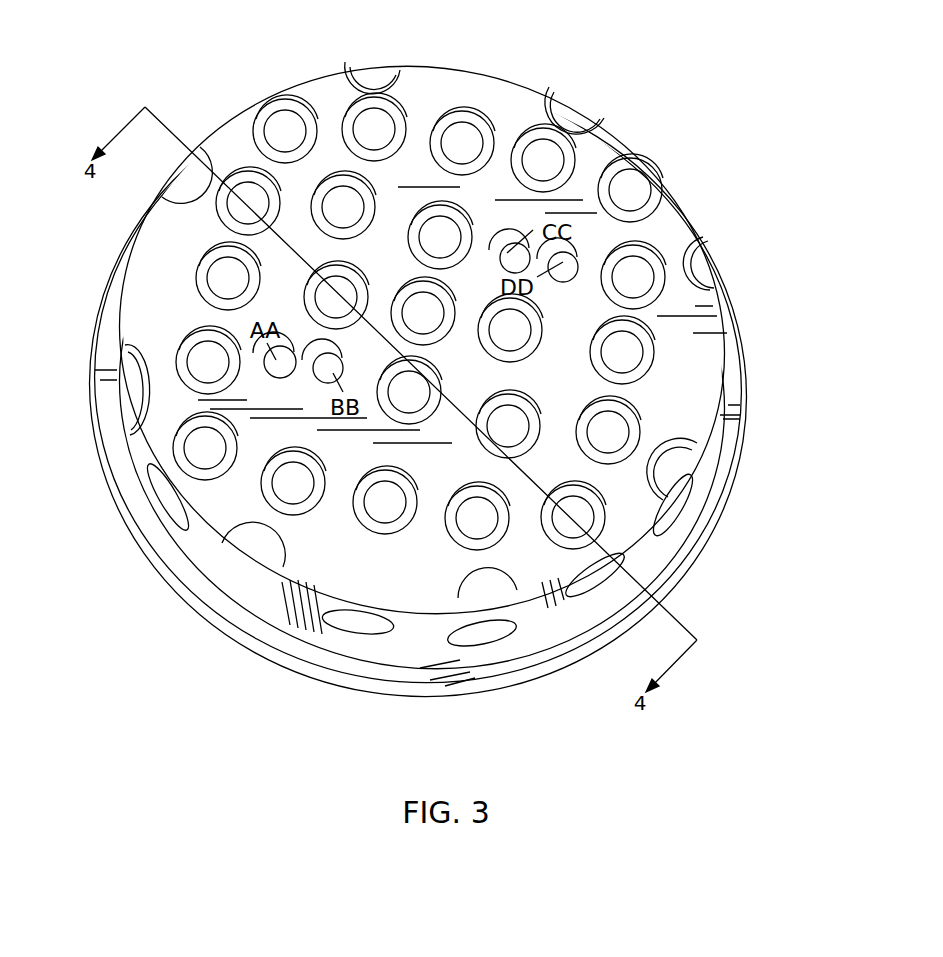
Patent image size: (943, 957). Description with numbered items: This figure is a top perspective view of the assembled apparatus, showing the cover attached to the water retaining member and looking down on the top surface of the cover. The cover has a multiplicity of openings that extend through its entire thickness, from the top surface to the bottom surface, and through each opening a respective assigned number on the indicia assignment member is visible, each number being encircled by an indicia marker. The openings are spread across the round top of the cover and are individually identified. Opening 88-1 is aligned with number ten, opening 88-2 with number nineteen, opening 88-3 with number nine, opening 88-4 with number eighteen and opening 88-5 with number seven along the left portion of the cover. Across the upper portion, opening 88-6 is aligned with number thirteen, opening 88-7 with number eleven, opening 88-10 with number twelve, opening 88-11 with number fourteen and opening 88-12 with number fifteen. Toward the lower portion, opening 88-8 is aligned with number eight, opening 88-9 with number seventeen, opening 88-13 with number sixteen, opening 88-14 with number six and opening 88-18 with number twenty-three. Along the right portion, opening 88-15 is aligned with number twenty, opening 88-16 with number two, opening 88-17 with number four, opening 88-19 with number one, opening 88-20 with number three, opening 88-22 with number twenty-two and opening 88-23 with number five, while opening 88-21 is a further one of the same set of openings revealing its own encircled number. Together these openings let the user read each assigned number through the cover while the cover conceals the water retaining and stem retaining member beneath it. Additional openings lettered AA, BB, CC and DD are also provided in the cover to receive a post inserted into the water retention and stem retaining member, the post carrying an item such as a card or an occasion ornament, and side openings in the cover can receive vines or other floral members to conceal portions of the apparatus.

The opening 88-1 is at (282, 103).
The opening 88-2 is at (216, 205).
The opening 88-3 is at (196, 279).
The opening 88-4 is at (177, 365).
The opening 88-5 is at (174, 450).
The opening 88-6 is at (352, 122).
The opening 88-7 is at (366, 185).
The opening 88-8 is at (387, 534).
The opening 88-9 is at (285, 515).
The opening 88-10 is at (471, 114).
The opening 88-11 is at (466, 219).
The opening 88-12 is at (453, 308).
The opening 88-13 is at (423, 417).
The opening 88-14 is at (337, 325).
The opening 88-15 is at (574, 167).
The opening 88-16 is at (531, 305).
The opening 88-17 is at (538, 414).
The opening 88-18 is at (503, 530).
The opening 88-19 is at (660, 189).
The opening 88-20 is at (651, 251).
The opening 88-21 is at (654, 352).
The opening 88-22 is at (641, 432).
The opening 88-23 is at (606, 517).